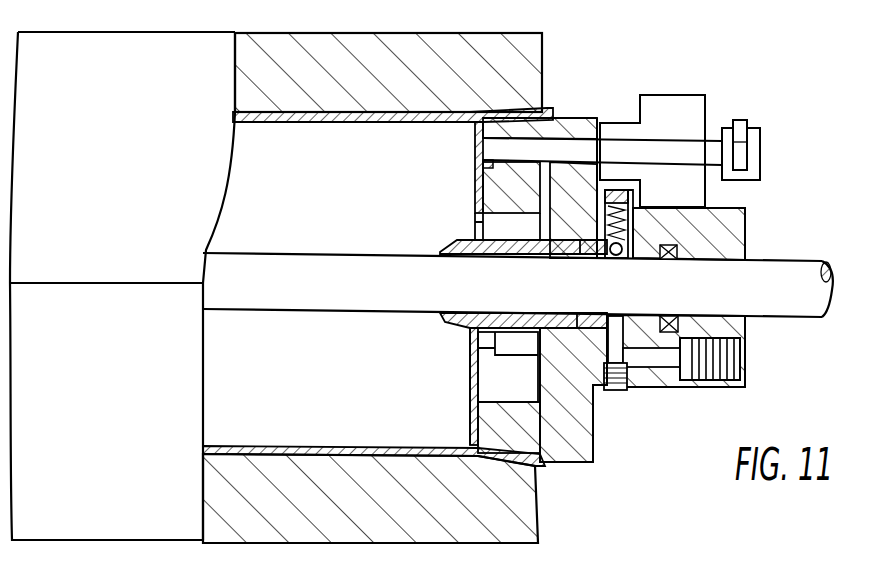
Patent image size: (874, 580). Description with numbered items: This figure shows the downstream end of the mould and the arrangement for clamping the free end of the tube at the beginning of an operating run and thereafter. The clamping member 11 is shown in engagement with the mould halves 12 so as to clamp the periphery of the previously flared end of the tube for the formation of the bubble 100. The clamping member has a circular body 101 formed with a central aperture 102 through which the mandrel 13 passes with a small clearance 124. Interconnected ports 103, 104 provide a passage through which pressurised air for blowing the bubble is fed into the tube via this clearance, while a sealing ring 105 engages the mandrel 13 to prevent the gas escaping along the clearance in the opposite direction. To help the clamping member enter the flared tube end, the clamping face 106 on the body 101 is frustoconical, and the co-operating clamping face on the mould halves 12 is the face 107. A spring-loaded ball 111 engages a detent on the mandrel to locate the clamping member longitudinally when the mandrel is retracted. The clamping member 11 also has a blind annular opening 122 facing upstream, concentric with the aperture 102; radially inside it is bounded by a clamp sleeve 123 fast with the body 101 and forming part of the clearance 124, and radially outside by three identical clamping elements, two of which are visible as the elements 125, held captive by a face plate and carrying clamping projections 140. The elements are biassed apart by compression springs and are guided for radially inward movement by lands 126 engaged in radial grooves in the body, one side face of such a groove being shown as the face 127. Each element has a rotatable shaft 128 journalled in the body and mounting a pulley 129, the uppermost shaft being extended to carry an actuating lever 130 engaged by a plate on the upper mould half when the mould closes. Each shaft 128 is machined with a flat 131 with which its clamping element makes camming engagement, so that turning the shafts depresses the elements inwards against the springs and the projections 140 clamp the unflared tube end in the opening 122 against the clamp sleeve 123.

The clamping member 11 is at (468, 412).
The mould halves 12 is at (120, 172).
The mandrel 13 is at (262, 252).
The bubble 100 is at (288, 446).
The circular body 101 is at (600, 422).
The central aperture 102 is at (440, 249).
The port 103 is at (742, 360).
The port 104 is at (643, 343).
The sealing ring 105 is at (677, 248).
The clamping face 106 is at (472, 452).
The clamping face 107 is at (557, 463).
The spring-loaded ball 111 is at (617, 256).
The blind annular opening 122 is at (486, 230).
The clamp sleeve 123 is at (486, 340).
The clearance 124 is at (445, 313).
The clamping elements 125 is at (477, 172).
The lands 126 is at (548, 220).
The side face of groove 127 is at (598, 126).
The rotatable shaft 128 is at (683, 152).
The pulley 129 is at (684, 98).
The actuating lever 130 is at (738, 125).
The flat 131 is at (484, 166).
The clamping projections 140 is at (483, 210).